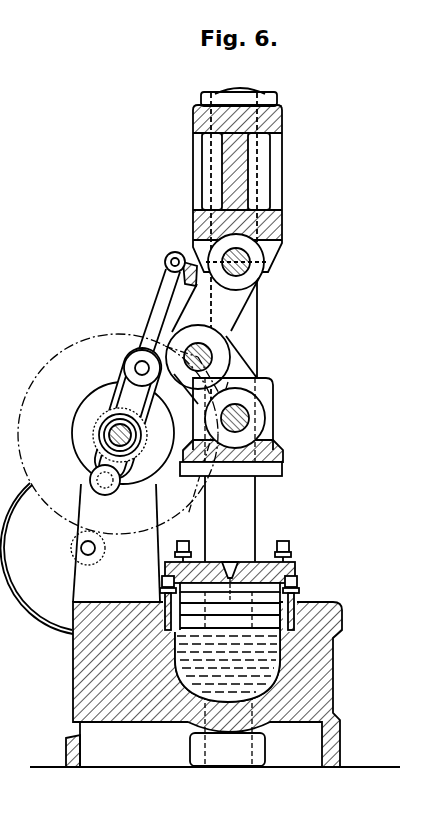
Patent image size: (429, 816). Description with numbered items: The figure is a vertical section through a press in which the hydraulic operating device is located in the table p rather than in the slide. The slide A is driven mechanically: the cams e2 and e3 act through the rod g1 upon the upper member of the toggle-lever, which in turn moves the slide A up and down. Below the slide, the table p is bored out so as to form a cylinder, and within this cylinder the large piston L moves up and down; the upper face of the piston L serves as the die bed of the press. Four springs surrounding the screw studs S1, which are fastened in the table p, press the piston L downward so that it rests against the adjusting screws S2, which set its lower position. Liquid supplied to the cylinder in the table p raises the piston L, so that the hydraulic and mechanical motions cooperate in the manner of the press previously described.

The rod g1 is at (163, 301).
The cam e3 is at (82, 424).
The cam e2 is at (124, 390).
The slide A is at (282, 452).
The screw studs S1 is at (190, 533).
The adjusting screws S2 is at (162, 580).
The large piston L is at (296, 584).
The table p is at (326, 670).